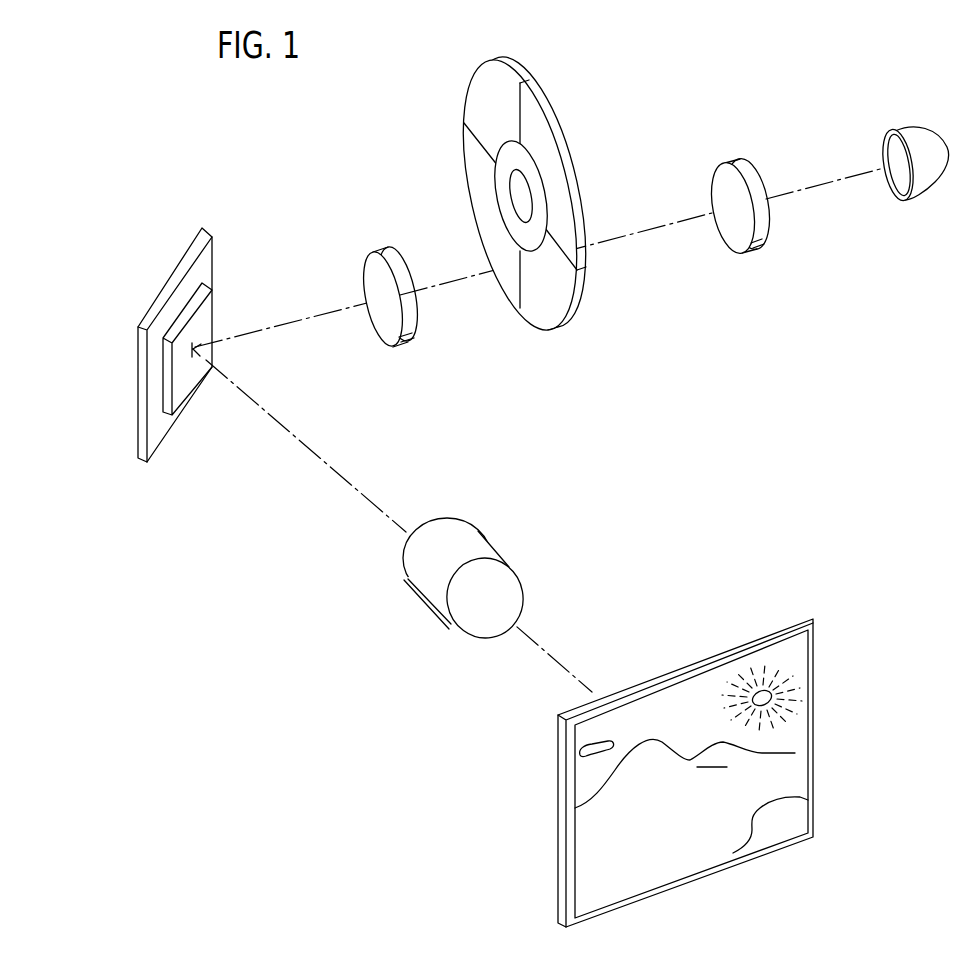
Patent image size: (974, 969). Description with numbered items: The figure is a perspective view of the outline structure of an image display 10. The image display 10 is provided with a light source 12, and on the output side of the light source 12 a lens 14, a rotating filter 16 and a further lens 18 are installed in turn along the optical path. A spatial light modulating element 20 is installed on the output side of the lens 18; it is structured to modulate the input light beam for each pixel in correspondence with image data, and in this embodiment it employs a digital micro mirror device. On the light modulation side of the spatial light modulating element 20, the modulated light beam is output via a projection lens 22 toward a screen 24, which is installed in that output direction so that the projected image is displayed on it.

The image display 10 is at (972, 452).
The light source 12 is at (921, 128).
The lens 14 is at (742, 161).
The rotating filter 16 is at (520, 66).
The lens 18 is at (387, 253).
The spatial light modulating element 20 is at (166, 416).
The projection lens 22 is at (488, 540).
The screen 24 is at (793, 623).